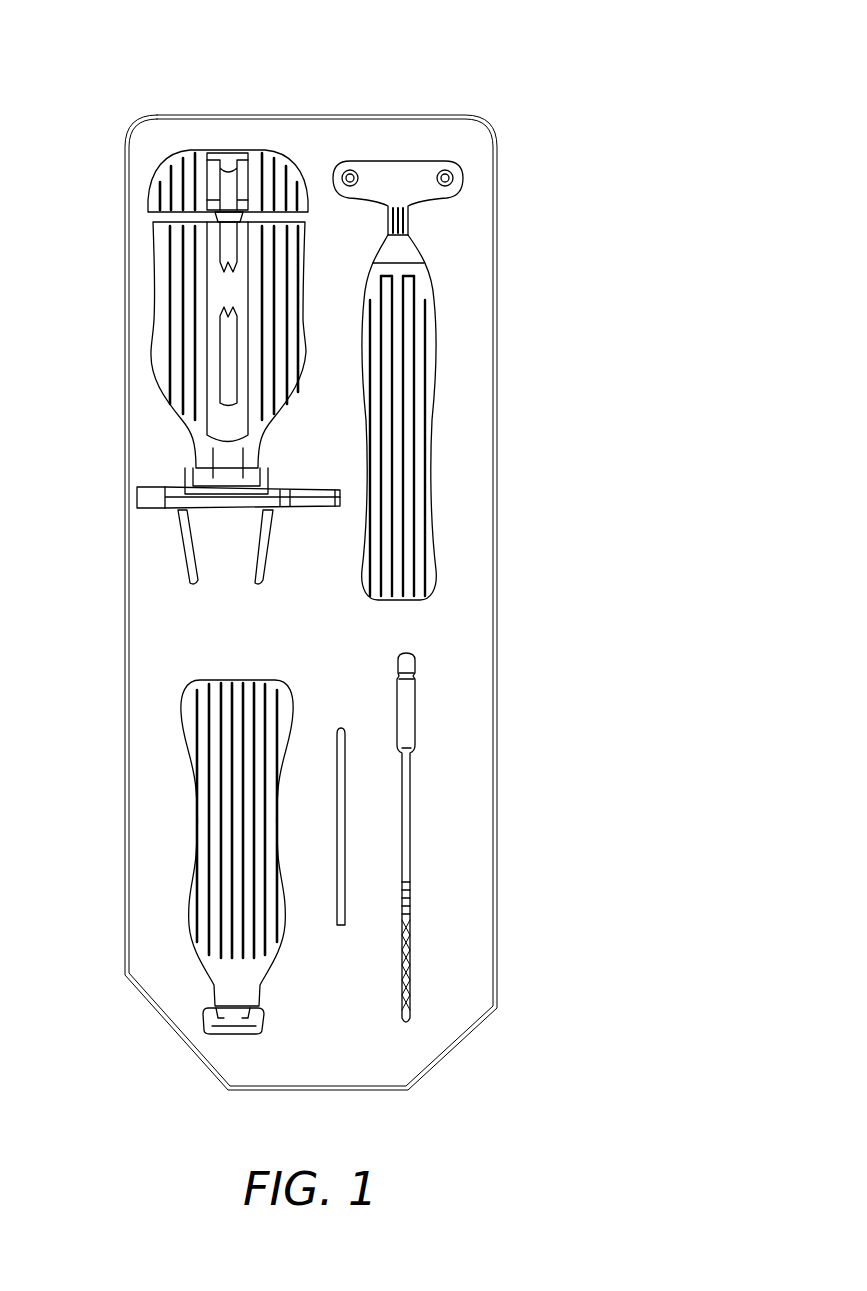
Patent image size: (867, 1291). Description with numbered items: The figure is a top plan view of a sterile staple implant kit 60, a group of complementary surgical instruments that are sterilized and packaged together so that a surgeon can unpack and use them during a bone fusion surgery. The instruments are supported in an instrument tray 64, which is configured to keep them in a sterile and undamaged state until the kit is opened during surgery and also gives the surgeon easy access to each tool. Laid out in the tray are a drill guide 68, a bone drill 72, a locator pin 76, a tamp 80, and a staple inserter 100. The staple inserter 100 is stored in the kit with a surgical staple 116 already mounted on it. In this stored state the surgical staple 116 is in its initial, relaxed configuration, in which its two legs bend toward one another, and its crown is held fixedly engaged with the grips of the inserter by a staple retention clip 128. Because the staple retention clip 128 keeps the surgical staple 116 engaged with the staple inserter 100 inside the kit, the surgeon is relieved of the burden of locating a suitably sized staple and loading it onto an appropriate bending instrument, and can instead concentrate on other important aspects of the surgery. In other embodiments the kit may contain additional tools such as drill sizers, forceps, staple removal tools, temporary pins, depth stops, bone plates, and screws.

The sterile staple implant kit 60 is at (441, 48).
The instrument tray 64 is at (497, 596).
The drill guide 68 is at (434, 326).
The bone drill 72 is at (412, 836).
The locator pin 76 is at (339, 928).
The tamp 80 is at (196, 850).
The staple inserter 100 is at (157, 275).
The surgical staple 116 is at (188, 572).
The staple retention clip 128 is at (165, 488).